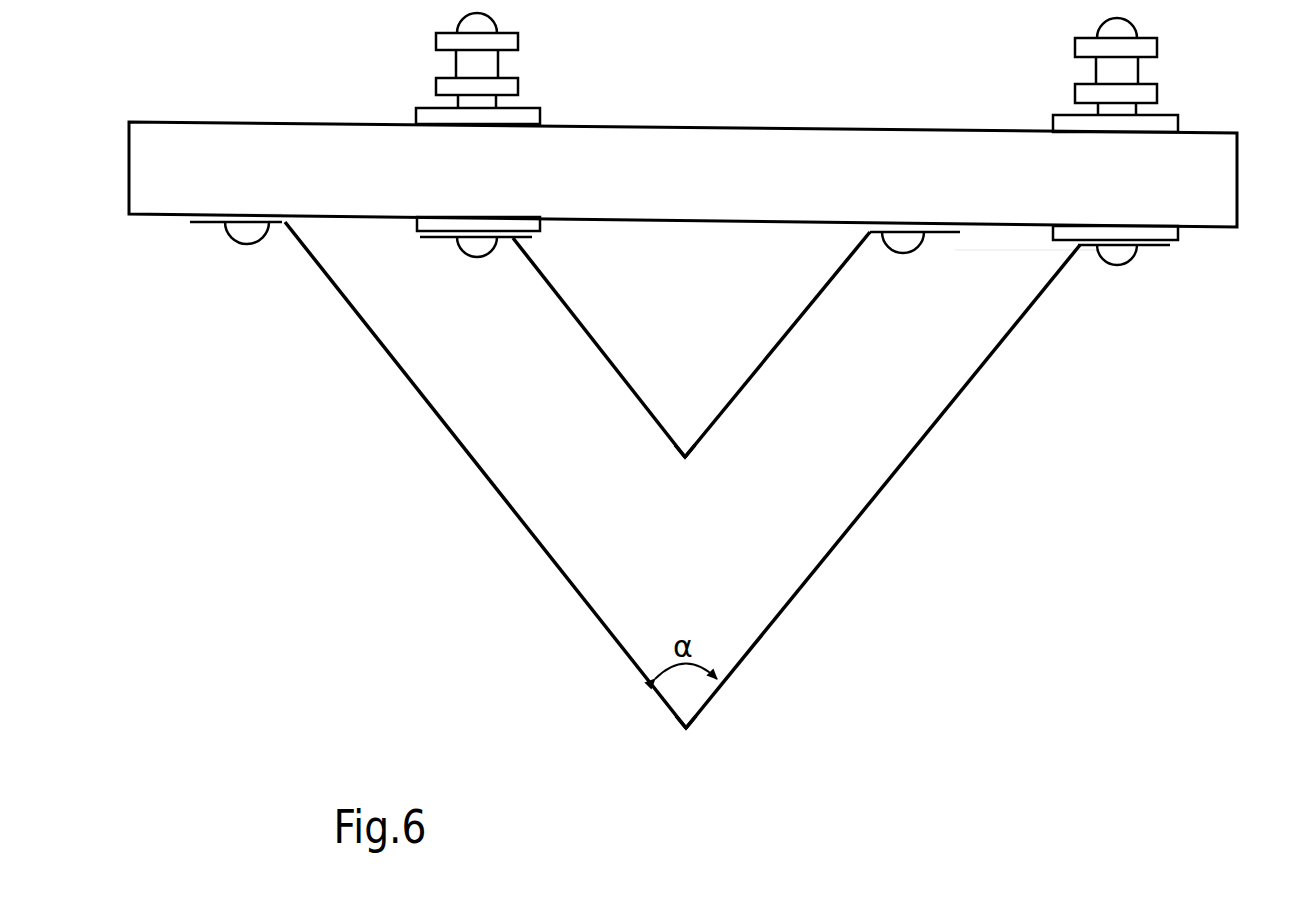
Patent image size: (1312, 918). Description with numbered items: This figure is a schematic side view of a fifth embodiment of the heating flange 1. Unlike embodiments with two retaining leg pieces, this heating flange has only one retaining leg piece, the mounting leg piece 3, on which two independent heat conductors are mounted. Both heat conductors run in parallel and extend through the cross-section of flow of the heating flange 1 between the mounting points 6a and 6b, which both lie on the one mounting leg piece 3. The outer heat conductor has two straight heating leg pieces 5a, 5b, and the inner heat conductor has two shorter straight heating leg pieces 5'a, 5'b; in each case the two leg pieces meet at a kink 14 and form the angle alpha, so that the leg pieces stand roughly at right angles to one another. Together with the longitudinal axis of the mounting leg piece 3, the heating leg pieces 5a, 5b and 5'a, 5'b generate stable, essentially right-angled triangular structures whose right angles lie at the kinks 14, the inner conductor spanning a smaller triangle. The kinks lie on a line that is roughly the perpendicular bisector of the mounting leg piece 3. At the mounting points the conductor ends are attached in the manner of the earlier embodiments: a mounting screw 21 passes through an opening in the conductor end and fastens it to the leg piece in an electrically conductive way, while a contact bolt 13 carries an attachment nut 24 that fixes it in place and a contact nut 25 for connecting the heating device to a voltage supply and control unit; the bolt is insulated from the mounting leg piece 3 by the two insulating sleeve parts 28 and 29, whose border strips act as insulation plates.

The heating flange 1 is at (1108, 592).
The mounting leg piece 3 is at (1238, 165).
The heating leg piece 5a is at (890, 480).
The heating leg piece 5b is at (480, 474).
The heating leg piece 5'a is at (807, 403).
The heating leg piece 5'b is at (564, 404).
The mounting point 6a is at (410, 196).
The mounting point 6b is at (956, 258).
The contact bolt 13 is at (498, 64).
The kink 14 is at (682, 450).
The mounting screw 21 is at (249, 245).
The attachment nut 24 is at (519, 86).
The contact nut 25 is at (519, 40).
The insulating sleeve part 28 is at (414, 110).
The insulating sleeve part 29 is at (414, 226).